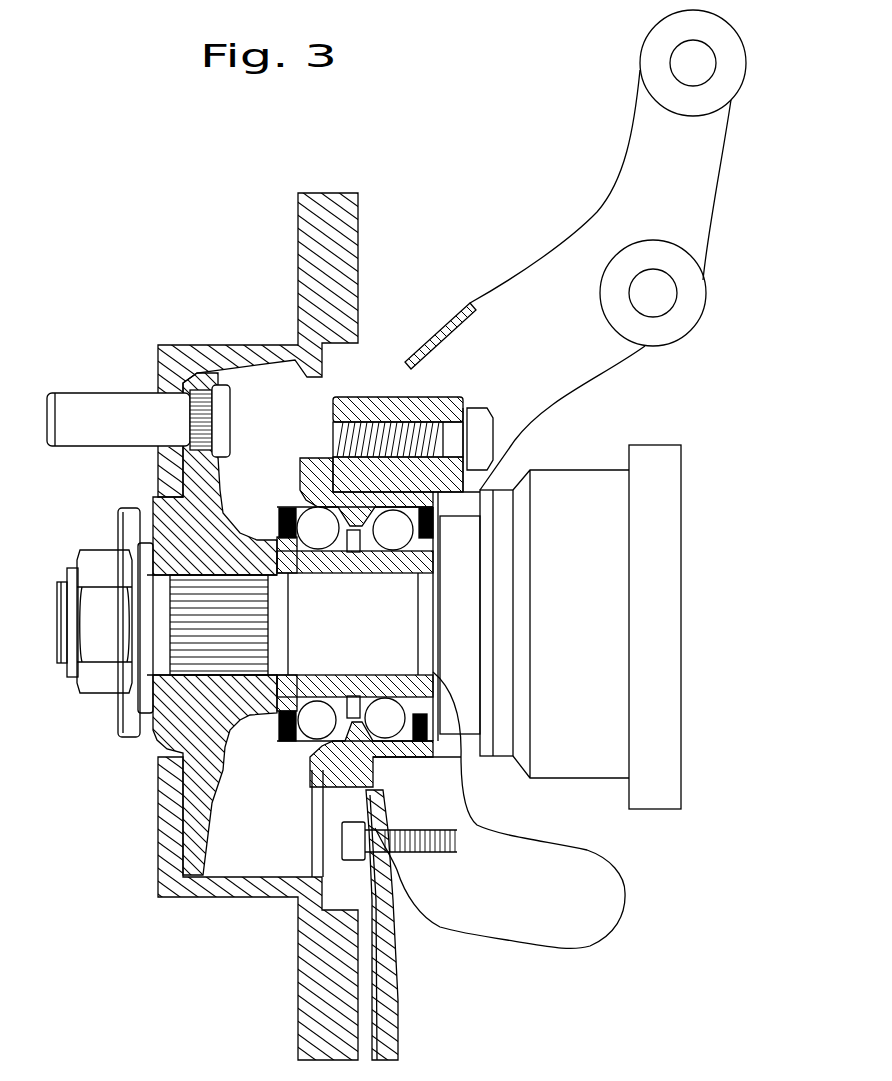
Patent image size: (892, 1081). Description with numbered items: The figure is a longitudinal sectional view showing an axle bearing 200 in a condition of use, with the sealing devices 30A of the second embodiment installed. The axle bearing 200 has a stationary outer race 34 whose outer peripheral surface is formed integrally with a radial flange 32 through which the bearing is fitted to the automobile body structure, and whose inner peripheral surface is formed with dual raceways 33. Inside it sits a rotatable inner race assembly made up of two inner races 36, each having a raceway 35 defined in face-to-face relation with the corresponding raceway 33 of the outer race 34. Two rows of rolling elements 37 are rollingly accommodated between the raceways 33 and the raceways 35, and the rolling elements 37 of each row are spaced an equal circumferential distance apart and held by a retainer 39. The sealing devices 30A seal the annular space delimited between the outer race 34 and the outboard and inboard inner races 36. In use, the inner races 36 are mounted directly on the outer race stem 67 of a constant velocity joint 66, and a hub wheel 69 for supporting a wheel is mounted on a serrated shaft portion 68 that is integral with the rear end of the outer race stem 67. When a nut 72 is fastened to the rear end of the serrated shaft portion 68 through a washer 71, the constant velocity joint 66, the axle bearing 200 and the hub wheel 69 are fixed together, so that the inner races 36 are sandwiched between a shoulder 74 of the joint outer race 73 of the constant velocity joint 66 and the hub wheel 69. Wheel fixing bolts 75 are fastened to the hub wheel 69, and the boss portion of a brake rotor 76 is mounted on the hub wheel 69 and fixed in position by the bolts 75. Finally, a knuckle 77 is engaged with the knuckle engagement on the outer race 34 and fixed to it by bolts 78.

The sealing device 30A is at (440, 502).
The radial flange 32 is at (370, 410).
The raceway 33 is at (418, 422).
The outer race 34 is at (318, 493).
The raceway 35 is at (318, 552).
The inner race 36 is at (352, 565).
The rolling element 37 is at (318, 740).
The retainer 39 is at (301, 735).
The constant velocity joint 66 is at (690, 490).
The outer race stem 67 is at (473, 835).
The serrated shaft portion 68 is at (217, 640).
The hub wheel 69 is at (162, 872).
The washer 71 is at (143, 642).
The nut 72 is at (100, 603).
The joint outer race 73 is at (597, 760).
The shoulder 74 is at (468, 553).
The wheel fixing bolt 75 is at (106, 405).
The brake rotor 76 is at (310, 262).
The knuckle 77 is at (537, 285).
The bolt 78 is at (478, 410).
The axle bearing 200 is at (297, 487).